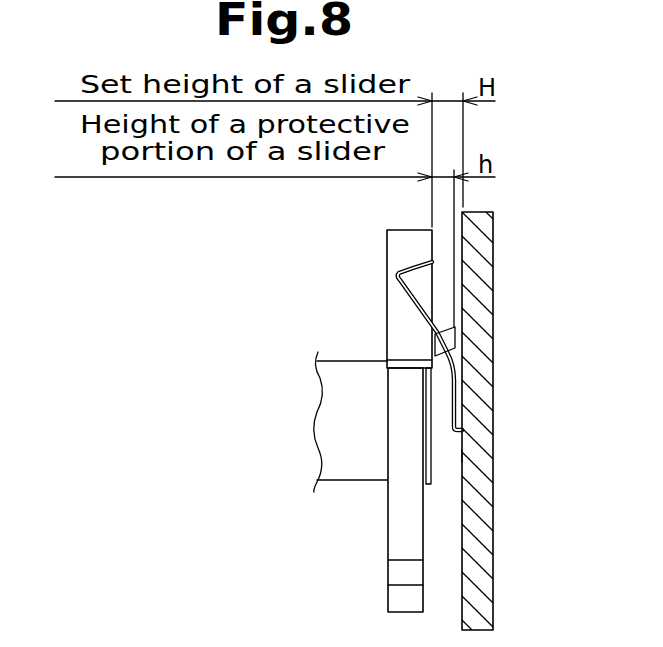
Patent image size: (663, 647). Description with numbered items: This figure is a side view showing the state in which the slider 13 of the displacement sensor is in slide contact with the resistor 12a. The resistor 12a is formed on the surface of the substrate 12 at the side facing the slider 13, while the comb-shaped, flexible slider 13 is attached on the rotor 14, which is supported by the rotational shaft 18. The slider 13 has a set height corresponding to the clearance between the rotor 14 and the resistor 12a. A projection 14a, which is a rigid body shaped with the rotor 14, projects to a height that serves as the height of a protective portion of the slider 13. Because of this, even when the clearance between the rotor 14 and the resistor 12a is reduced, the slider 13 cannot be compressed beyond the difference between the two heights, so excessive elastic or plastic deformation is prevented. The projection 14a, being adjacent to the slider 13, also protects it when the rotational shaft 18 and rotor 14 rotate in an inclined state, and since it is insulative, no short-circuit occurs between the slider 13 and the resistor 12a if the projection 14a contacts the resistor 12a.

The substrate 12 is at (488, 548).
The resistor 12a is at (462, 456).
The slider 13 is at (455, 437).
The rotor 14 is at (396, 248).
The projection 14a is at (455, 338).
The rotational shaft 18 is at (325, 384).